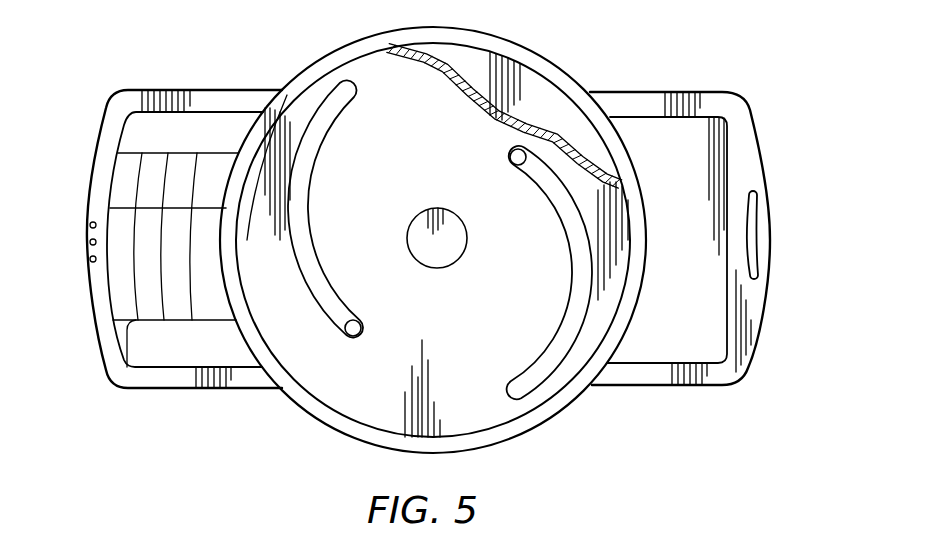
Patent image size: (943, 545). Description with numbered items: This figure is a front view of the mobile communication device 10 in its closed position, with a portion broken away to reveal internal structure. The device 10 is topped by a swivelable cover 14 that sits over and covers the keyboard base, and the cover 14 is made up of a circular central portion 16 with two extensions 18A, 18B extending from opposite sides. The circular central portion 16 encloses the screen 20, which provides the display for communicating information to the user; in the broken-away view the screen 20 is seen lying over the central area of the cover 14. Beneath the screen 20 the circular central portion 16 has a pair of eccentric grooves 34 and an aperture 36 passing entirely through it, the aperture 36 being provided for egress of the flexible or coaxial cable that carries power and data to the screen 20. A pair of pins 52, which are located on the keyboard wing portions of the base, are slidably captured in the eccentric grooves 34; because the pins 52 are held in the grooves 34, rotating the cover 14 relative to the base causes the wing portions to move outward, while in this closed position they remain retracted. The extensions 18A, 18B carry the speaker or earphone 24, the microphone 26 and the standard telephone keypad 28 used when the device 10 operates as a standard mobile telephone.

The mobile communication device 10 is at (200, 405).
The swivelable cover 14 is at (575, 78).
The circular central portion 16 is at (359, 436).
The extension 18A is at (98, 122).
The extension 18B is at (753, 340).
The screen 20 is at (523, 90).
The speaker or earphone 24 is at (756, 230).
The microphone 26 is at (90, 242).
The standard telephone keypad 28 is at (130, 323).
The eccentric grooves 34 is at (318, 118).
The aperture 36 is at (447, 270).
The pins 52 is at (508, 157).